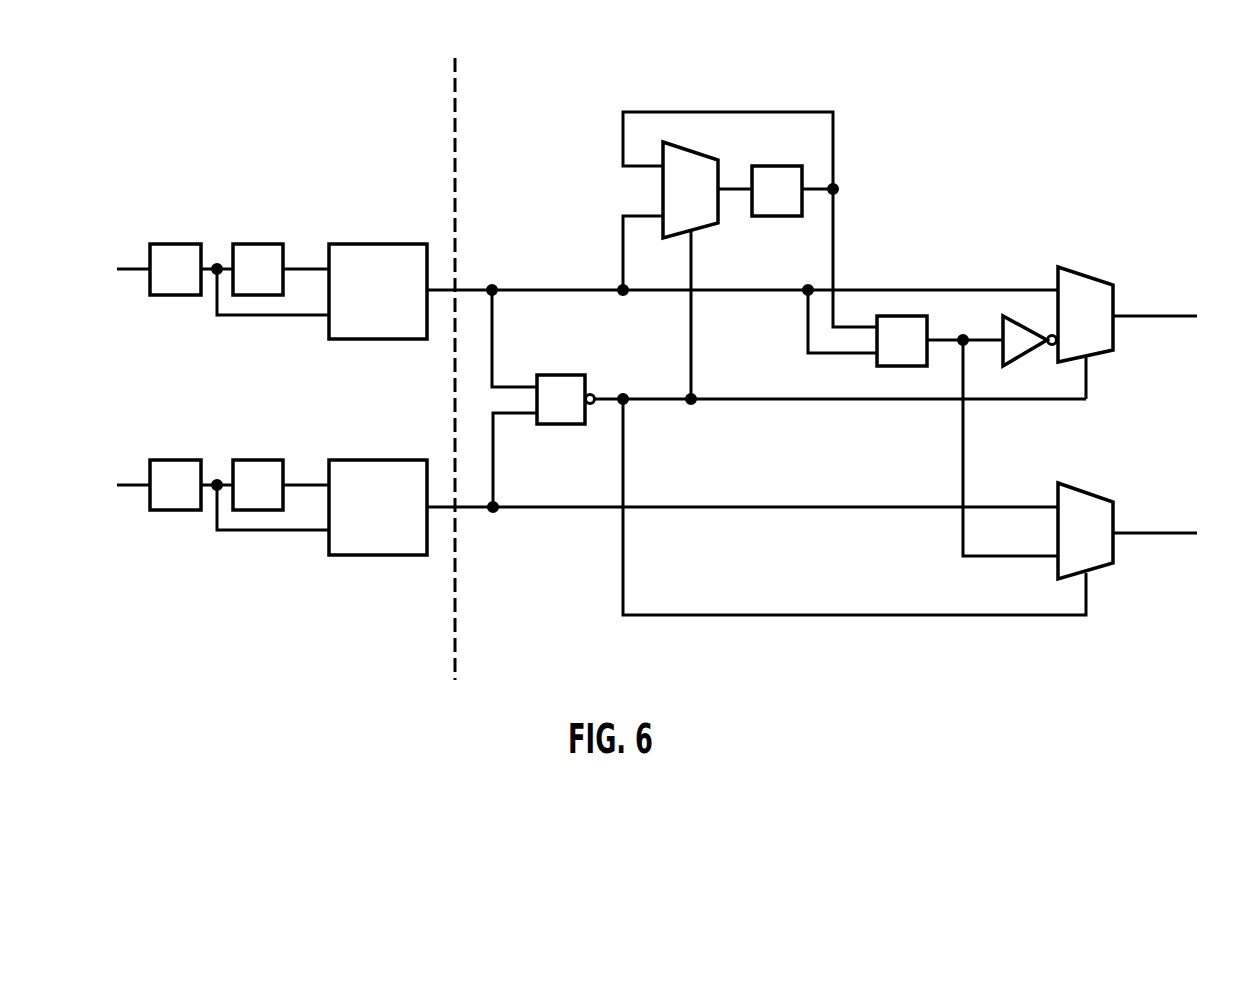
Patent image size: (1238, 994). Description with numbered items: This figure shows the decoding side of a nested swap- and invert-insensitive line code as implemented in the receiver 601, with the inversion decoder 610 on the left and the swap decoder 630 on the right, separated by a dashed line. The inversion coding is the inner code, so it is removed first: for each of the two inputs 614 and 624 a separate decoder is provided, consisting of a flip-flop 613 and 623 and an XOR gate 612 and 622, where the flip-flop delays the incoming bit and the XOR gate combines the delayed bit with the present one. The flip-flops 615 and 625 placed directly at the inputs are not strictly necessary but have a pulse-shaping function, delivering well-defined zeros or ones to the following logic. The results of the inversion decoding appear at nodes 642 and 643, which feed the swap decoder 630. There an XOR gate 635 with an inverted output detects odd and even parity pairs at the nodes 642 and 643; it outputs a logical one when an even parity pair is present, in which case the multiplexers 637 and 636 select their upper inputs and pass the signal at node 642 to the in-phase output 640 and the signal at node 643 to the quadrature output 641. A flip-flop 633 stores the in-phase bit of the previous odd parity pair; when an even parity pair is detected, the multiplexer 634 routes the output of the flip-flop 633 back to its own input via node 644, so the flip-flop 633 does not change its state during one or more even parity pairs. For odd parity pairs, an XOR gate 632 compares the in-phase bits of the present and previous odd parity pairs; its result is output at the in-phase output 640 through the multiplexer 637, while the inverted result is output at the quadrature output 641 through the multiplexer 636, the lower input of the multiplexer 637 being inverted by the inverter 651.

The receiver 601 is at (224, 49).
The inversion decoder 610 is at (308, 688).
The XOR gate 612 is at (379, 244).
The flip-flop 613 is at (258, 244).
The input 614 is at (127, 272).
The flip-flop 615 is at (176, 244).
The XOR gate 622 is at (379, 460).
The flip-flop 623 is at (258, 460).
The input 624 is at (127, 488).
The flip-flop 625 is at (176, 460).
The swap decoder 630 is at (822, 688).
The XOR gate 632 is at (901, 316).
The flip-flop 633 is at (782, 166).
The multiplexer 634 is at (710, 229).
The XOR gate 635 is at (559, 375).
The multiplexer 636 is at (1100, 572).
The multiplexer 637 is at (1100, 354).
The in-phase output 640 is at (1145, 316).
The quadrature output 641 is at (1145, 533).
The node 642 is at (476, 288).
The node 643 is at (486, 511).
The node 644 is at (734, 187).
The inverter 651 is at (1020, 316).